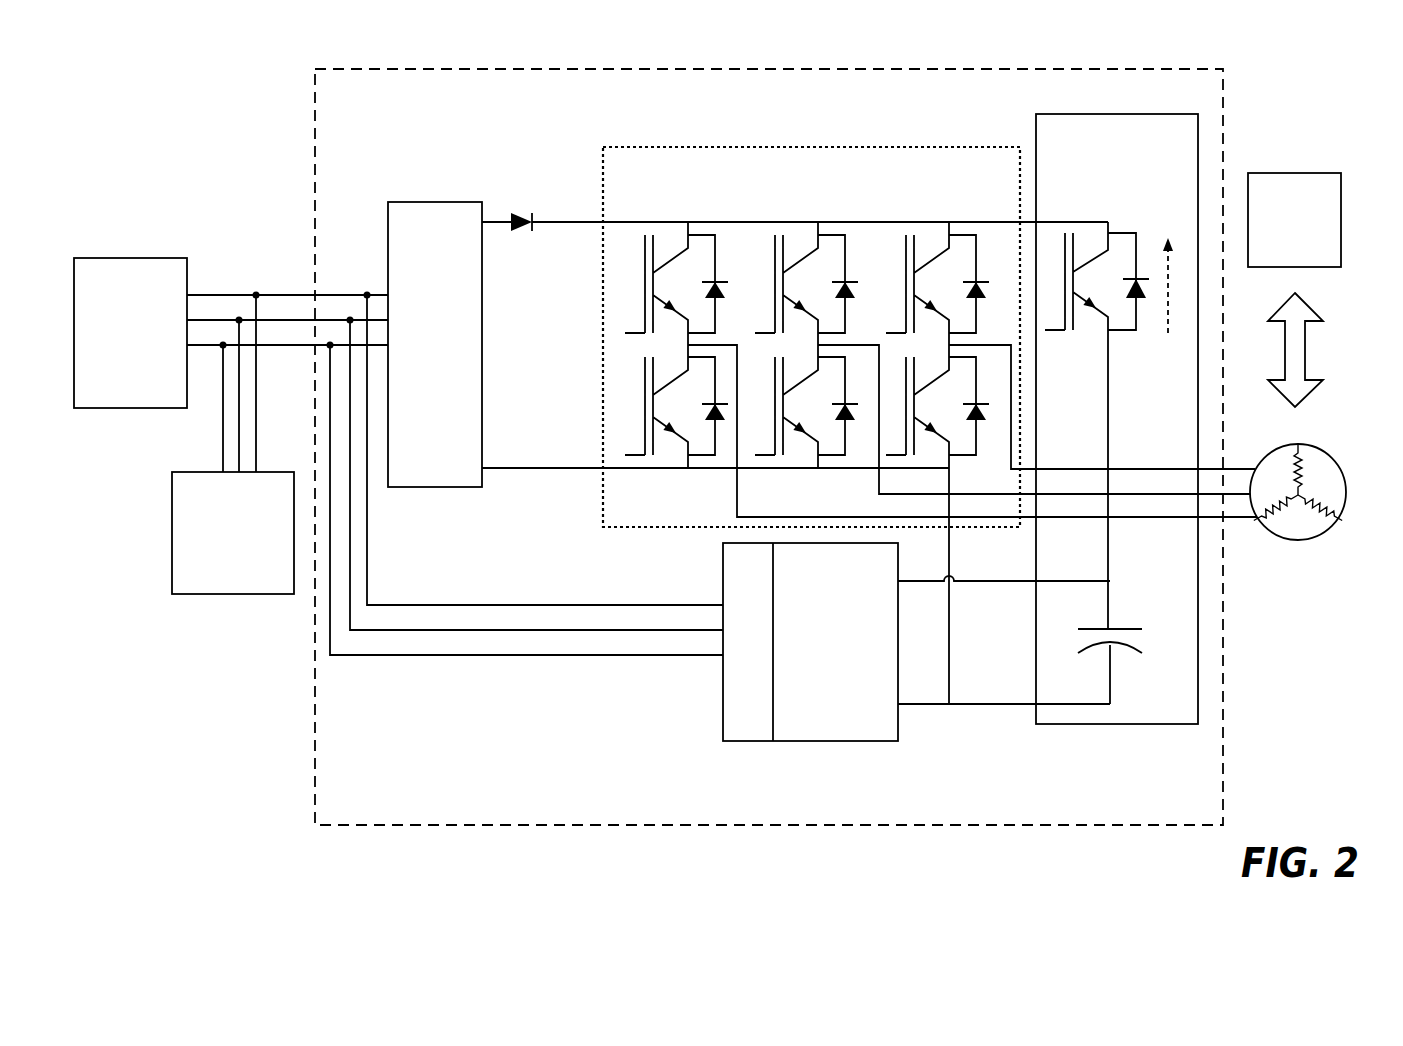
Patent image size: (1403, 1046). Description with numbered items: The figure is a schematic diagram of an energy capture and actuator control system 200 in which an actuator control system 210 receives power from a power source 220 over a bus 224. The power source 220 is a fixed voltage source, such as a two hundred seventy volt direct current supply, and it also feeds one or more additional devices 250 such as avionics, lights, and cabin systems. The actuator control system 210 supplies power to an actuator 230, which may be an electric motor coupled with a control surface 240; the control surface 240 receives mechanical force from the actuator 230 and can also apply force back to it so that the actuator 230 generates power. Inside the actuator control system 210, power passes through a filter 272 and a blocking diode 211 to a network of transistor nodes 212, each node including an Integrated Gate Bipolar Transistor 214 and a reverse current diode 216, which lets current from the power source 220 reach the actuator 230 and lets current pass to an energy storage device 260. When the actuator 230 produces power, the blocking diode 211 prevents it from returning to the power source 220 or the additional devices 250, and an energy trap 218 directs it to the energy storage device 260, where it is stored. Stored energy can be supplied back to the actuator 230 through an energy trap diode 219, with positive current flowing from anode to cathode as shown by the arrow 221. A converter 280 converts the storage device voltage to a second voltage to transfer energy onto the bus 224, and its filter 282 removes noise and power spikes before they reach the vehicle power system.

The energy capture and actuator control system 200 is at (120, 113).
The actuator control system 210 is at (472, 824).
The blocking diode 211 is at (518, 212).
The network of transistor nodes 212 is at (930, 404).
The Integrated Gate Bipolar Transistor (IGBT) 214 is at (663, 263).
The reverse current diode 216 is at (725, 280).
The energy trap 218 is at (1089, 423).
The energy trap diode 219 is at (1146, 278).
The power source 220 is at (105, 258).
The arrow 221 is at (1170, 293).
The bus 224 is at (214, 295).
The actuator 230 is at (1310, 445).
The control surface 240 is at (1268, 173).
The additional devices 250 is at (204, 470).
The energy storage device 260 is at (1062, 642).
The filter 272 is at (410, 202).
The converter 280 is at (895, 660).
The filter 282 is at (743, 743).